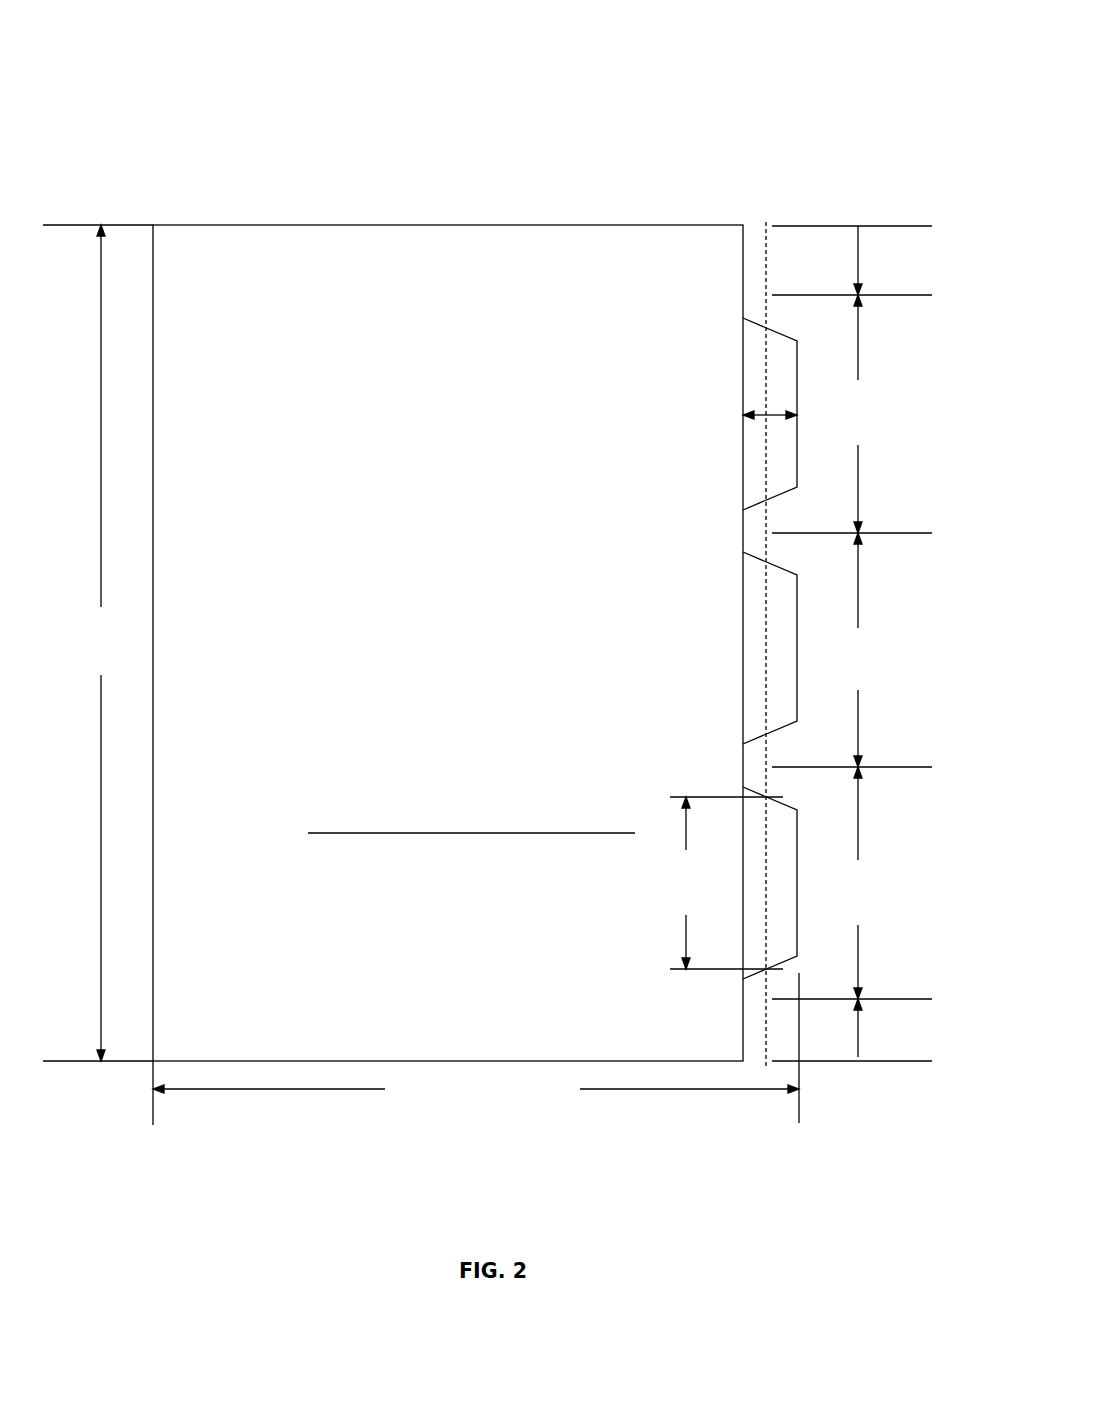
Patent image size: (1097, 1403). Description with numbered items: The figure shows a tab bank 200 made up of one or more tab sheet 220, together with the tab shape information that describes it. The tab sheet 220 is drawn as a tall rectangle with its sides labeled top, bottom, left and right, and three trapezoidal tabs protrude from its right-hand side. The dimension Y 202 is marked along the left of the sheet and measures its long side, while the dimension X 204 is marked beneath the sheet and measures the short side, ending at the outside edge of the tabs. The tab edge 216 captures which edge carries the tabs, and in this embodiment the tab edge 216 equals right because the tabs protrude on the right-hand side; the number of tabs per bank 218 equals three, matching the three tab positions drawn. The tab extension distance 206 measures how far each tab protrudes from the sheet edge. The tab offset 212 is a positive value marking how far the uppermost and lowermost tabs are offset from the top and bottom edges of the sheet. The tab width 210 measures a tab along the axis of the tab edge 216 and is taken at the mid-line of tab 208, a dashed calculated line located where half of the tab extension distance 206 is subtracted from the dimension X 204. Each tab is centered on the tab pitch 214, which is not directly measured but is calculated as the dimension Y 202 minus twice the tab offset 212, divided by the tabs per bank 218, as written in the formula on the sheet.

The tab bank 200 is at (880, 66).
The dimension Y 202 is at (118, 670).
The dimension X 204 is at (560, 1103).
The tab extension distance 206 is at (743, 415).
The mid-line of tab 208 is at (772, 637).
The tab width 210 is at (667, 910).
The tab offset 212 is at (903, 1107).
The tab pitch 214 is at (223, 912).
The tab edge 216 is at (253, 675).
The number of tabs per bank 218 is at (388, 767).
The tab sheet 220 is at (303, 368).